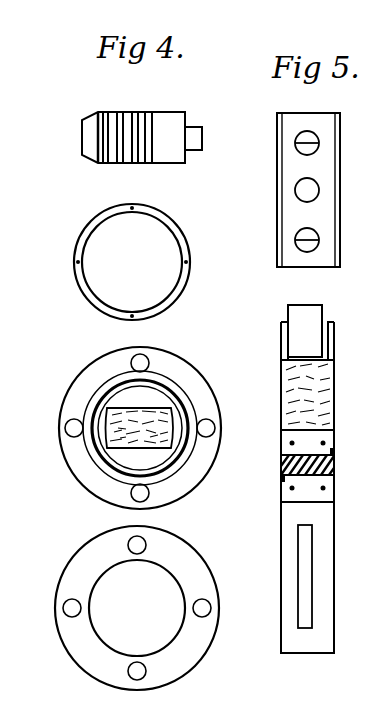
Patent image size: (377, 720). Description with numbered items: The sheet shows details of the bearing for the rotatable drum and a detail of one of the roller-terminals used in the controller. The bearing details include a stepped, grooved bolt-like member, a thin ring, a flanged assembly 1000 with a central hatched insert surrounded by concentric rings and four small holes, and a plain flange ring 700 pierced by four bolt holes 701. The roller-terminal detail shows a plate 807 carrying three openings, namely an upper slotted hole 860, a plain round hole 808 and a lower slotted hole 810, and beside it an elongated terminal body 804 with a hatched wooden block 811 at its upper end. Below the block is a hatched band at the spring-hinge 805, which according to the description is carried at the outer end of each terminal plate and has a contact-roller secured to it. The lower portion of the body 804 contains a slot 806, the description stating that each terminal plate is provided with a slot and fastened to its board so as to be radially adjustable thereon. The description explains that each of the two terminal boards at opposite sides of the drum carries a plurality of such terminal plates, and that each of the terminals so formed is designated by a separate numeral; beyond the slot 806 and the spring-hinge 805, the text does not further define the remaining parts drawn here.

In FIG. 4, the flange assembly with wooden insert 1000 is at (78, 377).
In FIG. 4, the flange ring 700 is at (75, 554).
In FIG. 4, the bolt hole 701 is at (66, 607).
In FIG. 5, the mounting plate 807 is at (277, 209).
In FIG. 5, the slotted hole 860 is at (293, 143).
In FIG. 5, the round hole 808 is at (293, 190).
In FIG. 5, the slotted hole 810 is at (293, 242).
In FIG. 5, the column body 804 is at (281, 518).
In FIG. 5, the wooden block 811 is at (282, 378).
In FIG. 5, the spring-hinge 805 is at (280, 462).
In FIG. 5, the slot 806 is at (297, 597).